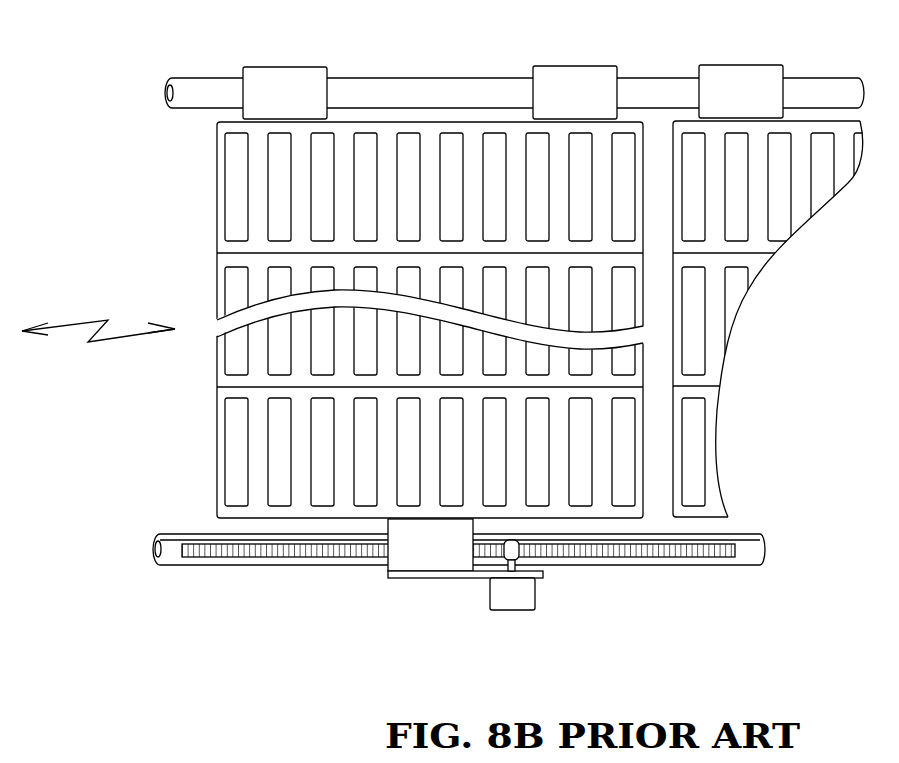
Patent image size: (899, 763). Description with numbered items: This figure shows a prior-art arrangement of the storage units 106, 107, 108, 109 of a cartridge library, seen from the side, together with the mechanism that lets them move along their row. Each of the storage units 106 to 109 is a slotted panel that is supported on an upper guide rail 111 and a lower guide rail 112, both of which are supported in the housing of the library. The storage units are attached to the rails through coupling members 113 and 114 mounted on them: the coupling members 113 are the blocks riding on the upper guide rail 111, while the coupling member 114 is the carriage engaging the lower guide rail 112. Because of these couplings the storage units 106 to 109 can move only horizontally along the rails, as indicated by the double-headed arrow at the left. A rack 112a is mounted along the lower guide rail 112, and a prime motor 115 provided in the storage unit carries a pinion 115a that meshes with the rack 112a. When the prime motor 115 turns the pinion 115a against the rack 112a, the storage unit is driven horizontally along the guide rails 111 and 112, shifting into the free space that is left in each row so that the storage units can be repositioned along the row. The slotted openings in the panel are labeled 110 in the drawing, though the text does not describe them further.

The storage unit 106 is at (218, 440).
The storage unit 107 is at (490, 409).
The storage unit 108 is at (490, 409).
The storage unit 109 is at (490, 409).
The slits (openings) 110 is at (278, 182).
The guide rail 111 is at (672, 78).
The guide rail 112 is at (183, 568).
The rack 112a is at (293, 560).
The coupling member 113 is at (268, 67).
The coupling member 114 is at (440, 560).
The prime motor 115 is at (523, 610).
The pinion 115a is at (542, 566).